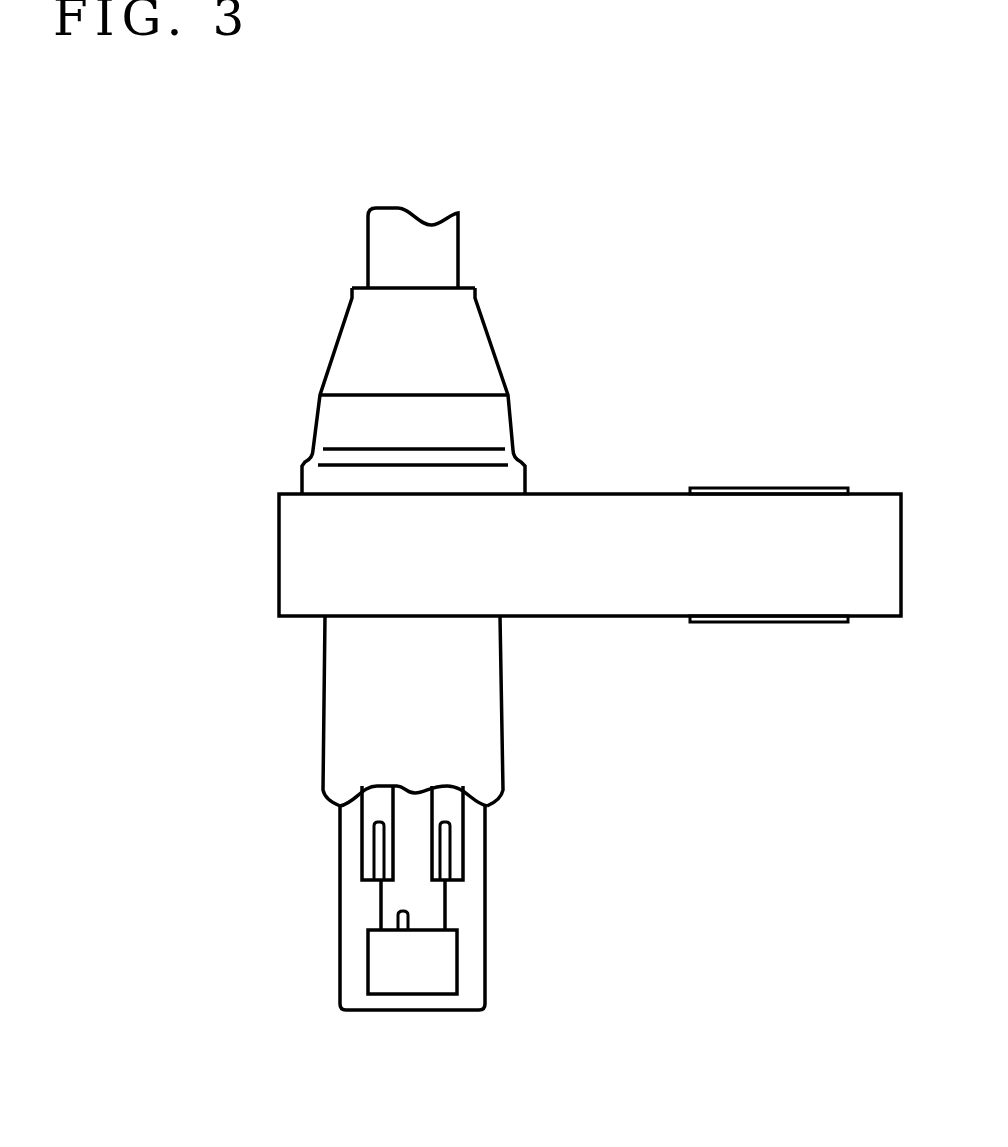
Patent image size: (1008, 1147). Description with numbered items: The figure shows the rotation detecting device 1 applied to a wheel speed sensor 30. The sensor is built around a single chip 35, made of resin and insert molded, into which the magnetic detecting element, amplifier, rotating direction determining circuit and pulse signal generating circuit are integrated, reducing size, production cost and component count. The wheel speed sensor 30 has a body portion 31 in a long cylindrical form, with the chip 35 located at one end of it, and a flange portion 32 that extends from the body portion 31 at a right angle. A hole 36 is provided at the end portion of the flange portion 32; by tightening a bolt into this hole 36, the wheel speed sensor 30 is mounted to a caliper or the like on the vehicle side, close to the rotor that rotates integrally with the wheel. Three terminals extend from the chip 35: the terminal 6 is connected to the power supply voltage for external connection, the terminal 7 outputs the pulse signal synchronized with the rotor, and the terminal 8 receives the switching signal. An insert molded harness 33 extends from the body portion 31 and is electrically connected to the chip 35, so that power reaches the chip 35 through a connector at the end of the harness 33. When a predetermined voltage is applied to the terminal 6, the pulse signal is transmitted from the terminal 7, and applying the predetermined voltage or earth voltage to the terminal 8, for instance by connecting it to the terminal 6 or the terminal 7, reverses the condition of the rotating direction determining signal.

The rotation detecting device 1 is at (485, 975).
The terminal 6 is at (375, 900).
The terminal 7 is at (450, 898).
The terminal 8 is at (410, 923).
The wheel speed sensor 30 is at (747, 420).
The body portion 31 is at (473, 375).
The flange portion 32 is at (622, 517).
The harness 33 is at (447, 262).
The chip 35 is at (427, 982).
The hole 36 is at (795, 483).